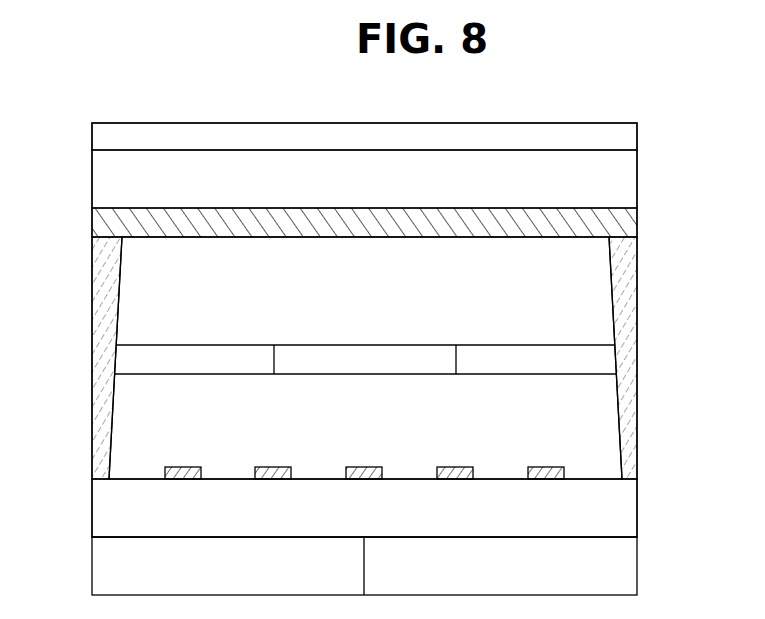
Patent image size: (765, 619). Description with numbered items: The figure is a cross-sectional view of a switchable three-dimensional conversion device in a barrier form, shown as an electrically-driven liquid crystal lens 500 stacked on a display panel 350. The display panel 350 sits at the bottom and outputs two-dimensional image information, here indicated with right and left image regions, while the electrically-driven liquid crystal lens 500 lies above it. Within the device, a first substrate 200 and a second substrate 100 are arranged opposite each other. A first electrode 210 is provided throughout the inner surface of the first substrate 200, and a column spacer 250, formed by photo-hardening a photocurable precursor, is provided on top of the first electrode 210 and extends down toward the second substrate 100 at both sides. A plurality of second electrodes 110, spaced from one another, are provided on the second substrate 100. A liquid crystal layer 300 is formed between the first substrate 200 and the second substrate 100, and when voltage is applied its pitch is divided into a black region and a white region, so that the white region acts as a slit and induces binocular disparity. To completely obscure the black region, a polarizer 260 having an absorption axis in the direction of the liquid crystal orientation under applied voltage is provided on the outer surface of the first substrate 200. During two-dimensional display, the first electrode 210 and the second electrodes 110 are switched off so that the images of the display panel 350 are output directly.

The second substrate 100 is at (628, 508).
The second electrodes 110 is at (562, 470).
The first substrate 200 is at (628, 165).
The first electrode 210 is at (628, 222).
The column spacer 250 is at (630, 410).
The polarizer 260 is at (628, 137).
The liquid crystal layer 300 is at (592, 292).
The display panel 350 is at (83, 537).
The electrically-driven liquid crystal lens 500 is at (83, 123).